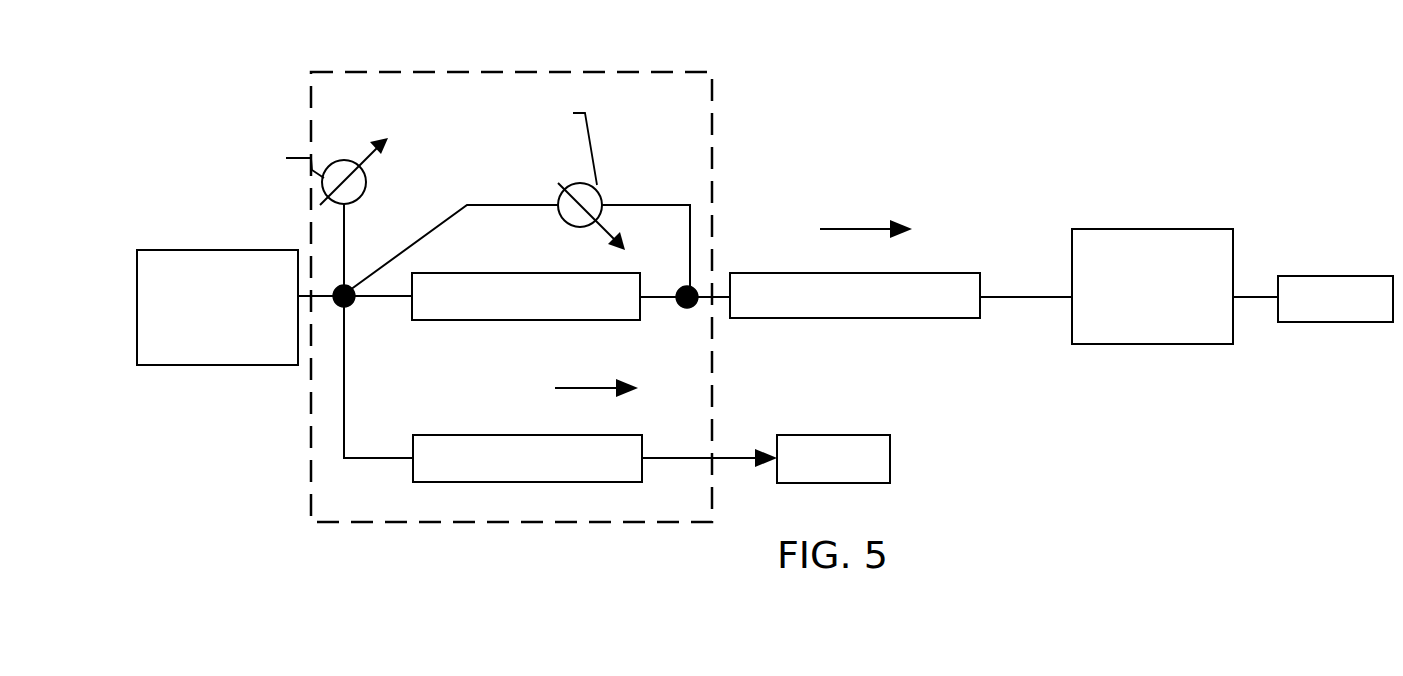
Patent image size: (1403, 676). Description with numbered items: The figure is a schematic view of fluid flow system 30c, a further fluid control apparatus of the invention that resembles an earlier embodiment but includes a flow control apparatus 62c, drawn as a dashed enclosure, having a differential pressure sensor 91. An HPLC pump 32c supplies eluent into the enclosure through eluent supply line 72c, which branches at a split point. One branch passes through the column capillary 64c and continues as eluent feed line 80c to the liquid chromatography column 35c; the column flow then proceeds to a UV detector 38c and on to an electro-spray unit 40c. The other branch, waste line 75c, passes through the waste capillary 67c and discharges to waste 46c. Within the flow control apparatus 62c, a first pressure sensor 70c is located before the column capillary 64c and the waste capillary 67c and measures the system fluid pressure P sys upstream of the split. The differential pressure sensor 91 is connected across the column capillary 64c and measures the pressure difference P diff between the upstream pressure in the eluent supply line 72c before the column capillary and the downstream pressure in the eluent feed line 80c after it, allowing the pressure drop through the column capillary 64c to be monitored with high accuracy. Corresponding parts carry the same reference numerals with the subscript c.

The fluid flow system 30c is at (816, 150).
The flow control apparatus 62c is at (708, 99).
The HPLC pump 32c is at (208, 350).
The eluent supply line 72c is at (385, 300).
The first pressure sensor 70c is at (343, 160).
The differential pressure sensor 91 is at (572, 216).
The column capillary 64c is at (545, 311).
The eluent feed line 80c is at (658, 302).
The liquid chromatography column 35c is at (958, 255).
The UV detector 38c is at (1194, 258).
The electro-spray unit 40c is at (1372, 287).
The waste line 75c is at (340, 411).
The waste capillary 67c is at (560, 473).
The waste 46c is at (866, 446).